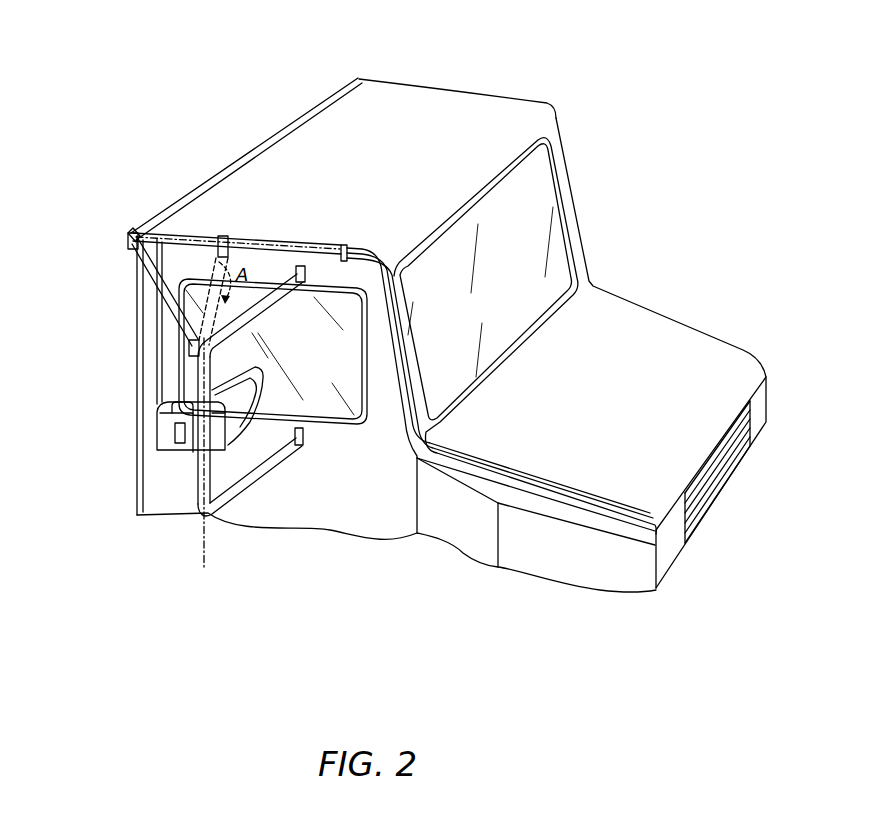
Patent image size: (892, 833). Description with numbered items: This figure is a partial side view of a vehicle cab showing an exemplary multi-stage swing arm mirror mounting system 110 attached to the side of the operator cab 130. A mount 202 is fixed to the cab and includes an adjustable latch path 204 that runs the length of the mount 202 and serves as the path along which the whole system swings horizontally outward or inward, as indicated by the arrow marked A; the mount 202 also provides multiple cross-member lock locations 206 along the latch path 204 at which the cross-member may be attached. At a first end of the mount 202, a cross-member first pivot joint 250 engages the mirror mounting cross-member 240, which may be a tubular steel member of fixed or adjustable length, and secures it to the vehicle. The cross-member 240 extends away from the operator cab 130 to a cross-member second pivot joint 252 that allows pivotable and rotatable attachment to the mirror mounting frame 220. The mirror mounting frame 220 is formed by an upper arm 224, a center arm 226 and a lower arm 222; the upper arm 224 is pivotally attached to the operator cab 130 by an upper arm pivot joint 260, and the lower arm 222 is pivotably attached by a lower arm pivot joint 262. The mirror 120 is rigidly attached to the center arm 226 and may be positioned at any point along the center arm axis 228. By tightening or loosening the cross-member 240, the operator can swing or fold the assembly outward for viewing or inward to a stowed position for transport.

The mirror mounting system 110 is at (100, 473).
The mirror 120 is at (258, 385).
The operator cab 130 is at (372, 141).
The mount 202 is at (274, 241).
The adjustable latch path 204 is at (320, 243).
The cross-member lock locations 206 is at (132, 230).
The mirror mounting frame 220 is at (186, 491).
The lower arm 222 is at (268, 468).
The upper arm 224 is at (252, 308).
The center arm 226 is at (198, 488).
The center arm axis 228 is at (207, 547).
The mirror mounting cross-member 240 is at (158, 288).
The cross-member first pivot joint 250 is at (132, 235).
The cross-member second pivot joint 252 is at (187, 363).
The upper arm pivot joint 260 is at (306, 272).
The lower arm pivot joint 262 is at (301, 442).